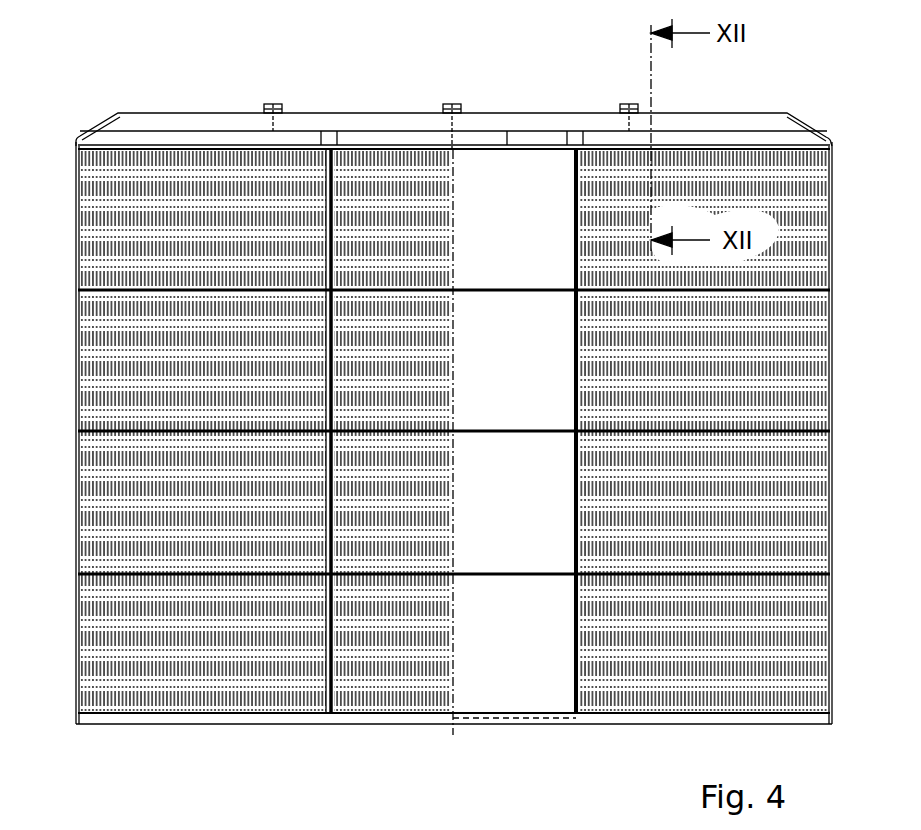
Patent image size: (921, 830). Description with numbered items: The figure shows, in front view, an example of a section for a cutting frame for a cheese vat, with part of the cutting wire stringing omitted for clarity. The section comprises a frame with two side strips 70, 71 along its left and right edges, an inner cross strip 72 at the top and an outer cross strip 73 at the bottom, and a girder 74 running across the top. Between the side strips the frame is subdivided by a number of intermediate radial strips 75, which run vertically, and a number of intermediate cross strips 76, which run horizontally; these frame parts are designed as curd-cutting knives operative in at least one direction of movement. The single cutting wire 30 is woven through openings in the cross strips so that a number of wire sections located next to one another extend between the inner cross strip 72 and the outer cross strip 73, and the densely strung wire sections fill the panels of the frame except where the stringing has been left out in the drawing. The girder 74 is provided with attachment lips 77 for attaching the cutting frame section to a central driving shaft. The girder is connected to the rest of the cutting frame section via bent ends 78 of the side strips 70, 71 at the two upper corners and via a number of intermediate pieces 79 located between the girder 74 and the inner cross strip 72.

The cutting wire 30 is at (454, 188).
The side strip 70 is at (73, 634).
The side strip 71 is at (836, 637).
The inner cross strip 72 is at (507, 142).
The outer cross strip 73 is at (505, 726).
The girder 74 is at (740, 112).
The intermediate radial strip 75 is at (330, 500).
The intermediate cross strip 76 is at (508, 289).
The attachment lip 77 is at (272, 103).
The bent end 78 is at (92, 120).
The intermediate piece 79 is at (327, 139).